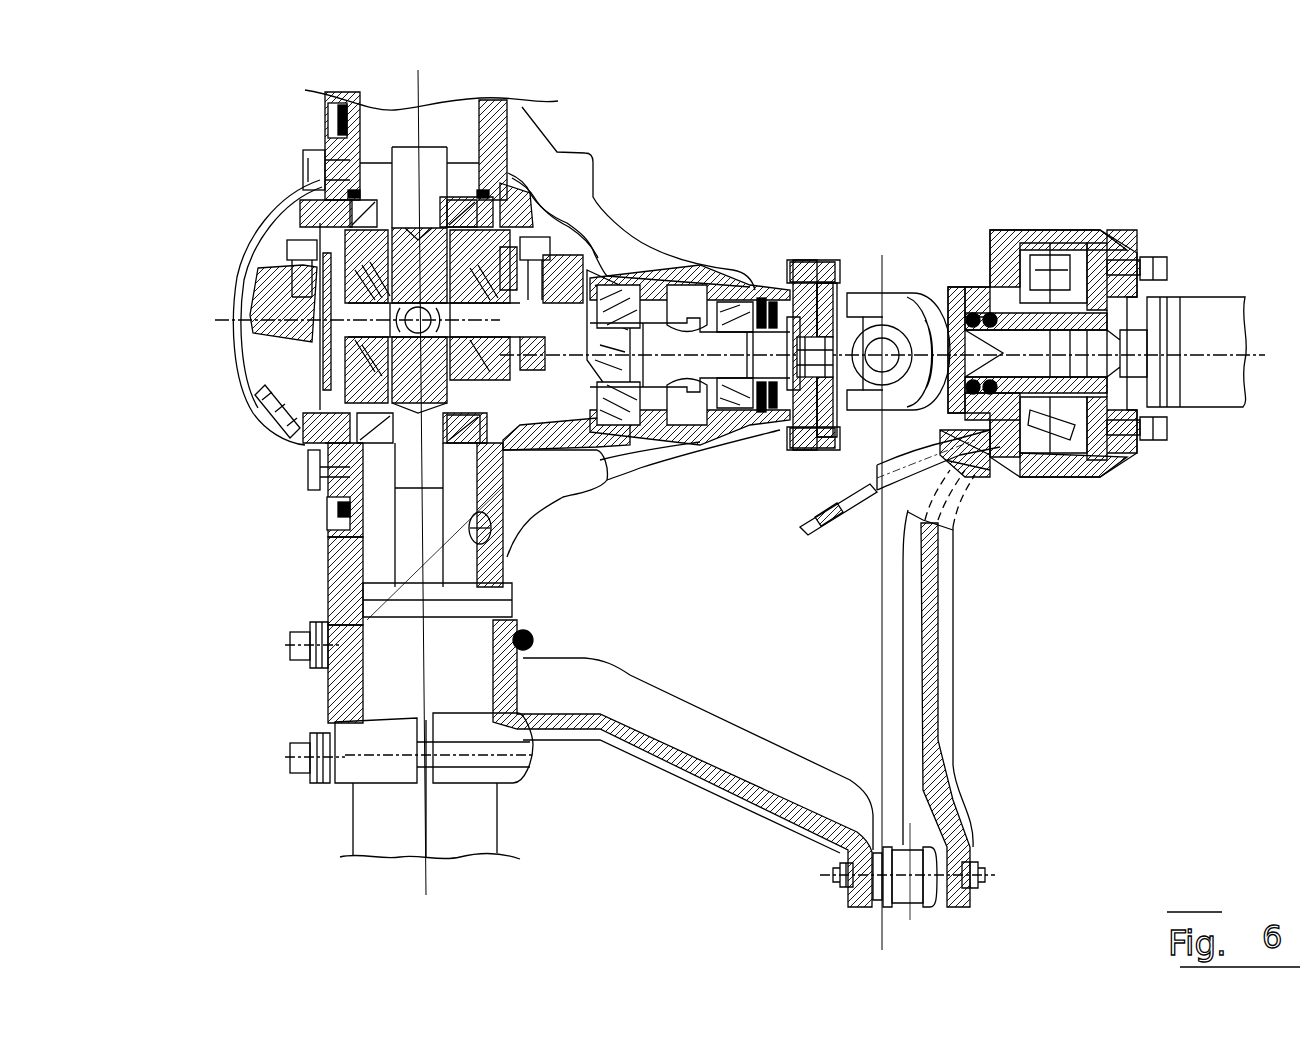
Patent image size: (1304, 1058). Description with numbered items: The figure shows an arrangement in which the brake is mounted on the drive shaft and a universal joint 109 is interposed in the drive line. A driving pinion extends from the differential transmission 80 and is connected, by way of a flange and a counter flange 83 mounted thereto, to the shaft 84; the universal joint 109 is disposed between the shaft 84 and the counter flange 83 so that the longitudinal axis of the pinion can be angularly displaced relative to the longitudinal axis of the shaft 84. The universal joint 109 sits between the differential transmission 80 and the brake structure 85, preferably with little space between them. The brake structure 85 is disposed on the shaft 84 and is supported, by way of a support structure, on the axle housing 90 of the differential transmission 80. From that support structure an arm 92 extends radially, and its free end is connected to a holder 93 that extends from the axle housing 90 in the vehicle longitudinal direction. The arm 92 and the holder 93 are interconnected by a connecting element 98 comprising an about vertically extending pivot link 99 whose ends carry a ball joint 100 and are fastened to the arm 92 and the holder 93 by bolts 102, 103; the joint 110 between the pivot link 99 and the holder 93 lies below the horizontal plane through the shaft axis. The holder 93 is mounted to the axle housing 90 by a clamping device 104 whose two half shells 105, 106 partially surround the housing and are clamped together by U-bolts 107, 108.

The differential transmission 80 is at (688, 218).
The counter flange 83 is at (832, 302).
The universal joint 109 is at (907, 297).
The brake structure 85 is at (1095, 211).
The shaft 84 is at (1137, 296).
The axle housing 90 is at (332, 595).
The U-bolt 107 is at (285, 658).
The half shell 105 is at (325, 698).
The U-bolt 108 is at (290, 763).
The clamping device 104 is at (330, 805).
The half shell 106 is at (522, 787).
The holder 93 is at (703, 783).
The arm 92 is at (942, 663).
The bolt 103 is at (983, 870).
The bolt 102 is at (835, 888).
The connecting element 98 is at (884, 918).
The pivot link 99 is at (925, 895).
The ball joint 100 is at (887, 877).
The joint 110 is at (930, 877).